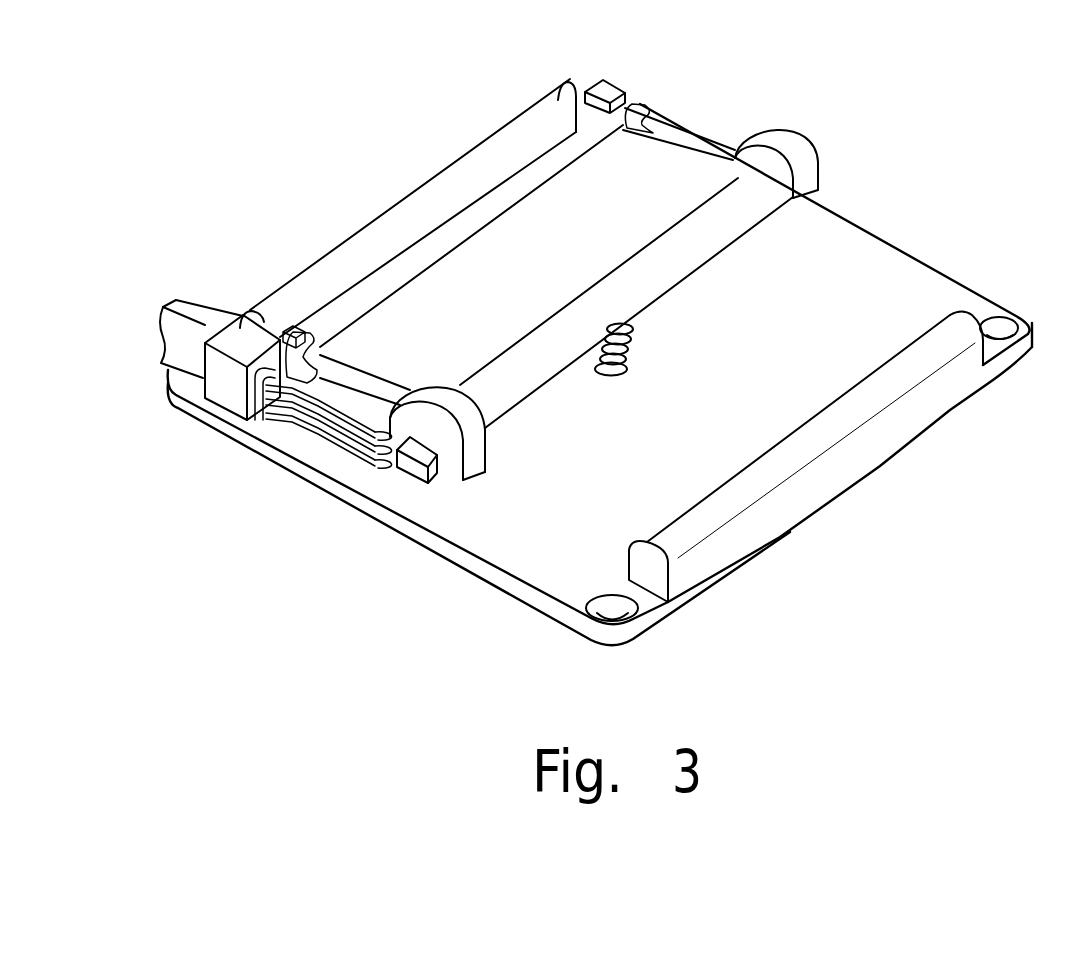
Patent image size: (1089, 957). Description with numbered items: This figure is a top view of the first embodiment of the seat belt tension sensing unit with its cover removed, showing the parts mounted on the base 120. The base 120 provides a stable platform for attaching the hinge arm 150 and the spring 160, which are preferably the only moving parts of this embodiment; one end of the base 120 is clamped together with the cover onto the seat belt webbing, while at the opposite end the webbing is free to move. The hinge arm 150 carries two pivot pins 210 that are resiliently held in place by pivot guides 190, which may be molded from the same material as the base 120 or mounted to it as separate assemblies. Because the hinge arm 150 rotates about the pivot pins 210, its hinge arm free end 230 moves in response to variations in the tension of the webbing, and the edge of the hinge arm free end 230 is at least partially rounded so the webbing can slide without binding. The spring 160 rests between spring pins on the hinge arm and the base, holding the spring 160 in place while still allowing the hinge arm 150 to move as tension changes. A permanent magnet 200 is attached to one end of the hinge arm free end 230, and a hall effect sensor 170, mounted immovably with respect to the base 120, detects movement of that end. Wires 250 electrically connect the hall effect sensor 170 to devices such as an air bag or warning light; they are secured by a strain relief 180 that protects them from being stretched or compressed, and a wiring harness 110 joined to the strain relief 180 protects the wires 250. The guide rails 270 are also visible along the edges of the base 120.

The wiring harness 110 is at (182, 306).
The base 120 is at (1010, 360).
The hinge arm 150 is at (703, 173).
The spring 160 is at (627, 343).
The hall effect sensor 170 is at (415, 470).
The strain relief 180 is at (225, 403).
The pivot guides 190 is at (322, 352).
The permanent magnet 200 is at (458, 473).
The pivot pins 210 is at (286, 338).
The hinge arm free end 230 is at (710, 247).
The wires 250 is at (340, 435).
The guide rail 270 is at (512, 130).